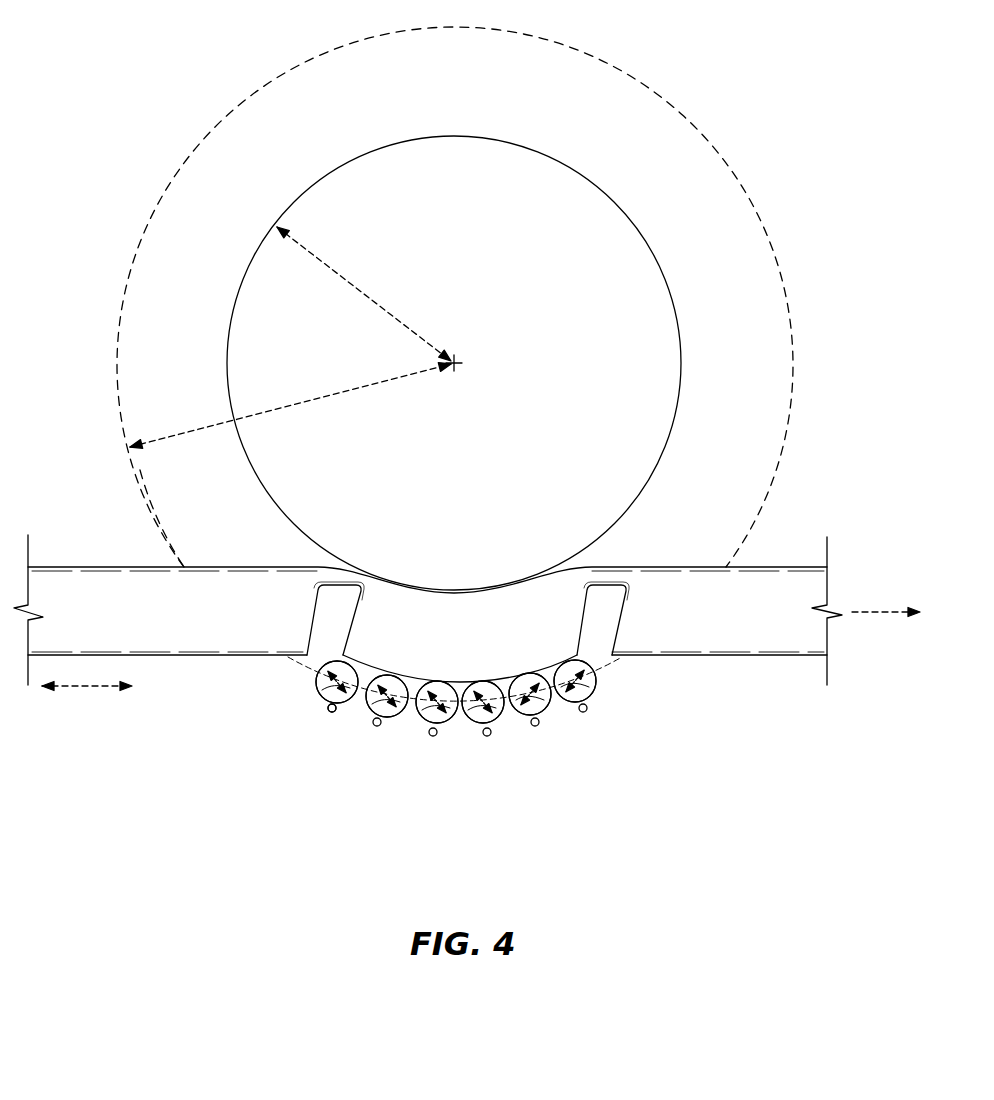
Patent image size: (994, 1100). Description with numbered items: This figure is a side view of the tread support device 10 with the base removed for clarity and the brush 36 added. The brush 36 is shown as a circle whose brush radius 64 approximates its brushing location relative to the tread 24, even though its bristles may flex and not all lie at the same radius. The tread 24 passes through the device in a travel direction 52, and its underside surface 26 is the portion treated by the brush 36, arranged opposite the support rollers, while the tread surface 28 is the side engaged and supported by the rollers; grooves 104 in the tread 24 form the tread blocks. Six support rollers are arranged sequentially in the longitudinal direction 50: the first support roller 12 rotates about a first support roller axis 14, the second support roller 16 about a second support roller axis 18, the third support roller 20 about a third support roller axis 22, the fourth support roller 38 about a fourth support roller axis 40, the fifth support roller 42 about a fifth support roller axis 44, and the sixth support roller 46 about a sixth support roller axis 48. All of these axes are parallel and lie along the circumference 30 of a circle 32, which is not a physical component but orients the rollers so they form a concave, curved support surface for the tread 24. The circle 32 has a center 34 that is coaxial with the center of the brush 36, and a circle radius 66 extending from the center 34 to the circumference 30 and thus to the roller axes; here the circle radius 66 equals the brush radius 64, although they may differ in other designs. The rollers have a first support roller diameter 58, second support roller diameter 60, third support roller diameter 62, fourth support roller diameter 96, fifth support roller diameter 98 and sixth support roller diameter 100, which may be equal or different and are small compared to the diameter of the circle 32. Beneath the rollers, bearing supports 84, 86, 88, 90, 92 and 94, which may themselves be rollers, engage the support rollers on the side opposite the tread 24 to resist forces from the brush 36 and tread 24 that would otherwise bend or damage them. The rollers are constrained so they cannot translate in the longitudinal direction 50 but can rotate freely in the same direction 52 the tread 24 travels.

The tread support device 10 is at (618, 753).
The first support roller 12 is at (322, 708).
The first support roller axis 14 is at (317, 683).
The second support roller 16 is at (370, 713).
The second support roller axis 18 is at (400, 676).
The third support roller 20 is at (452, 722).
The third support roller axis 22 is at (443, 686).
The tread 24 is at (770, 588).
The underside surface 26 is at (648, 567).
The tread surface 28 is at (718, 655).
The circumference 30 is at (150, 522).
The circle 32 is at (782, 278).
The center 34 is at (457, 357).
The brush 36 is at (678, 310).
The fourth support roller 38 is at (465, 723).
The fourth support roller axis 40 is at (473, 687).
The fifth support roller 42 is at (524, 720).
The fifth support roller axis 44 is at (517, 675).
The sixth support roller 46 is at (566, 705).
The sixth support roller axis 48 is at (559, 672).
The longitudinal direction 50 is at (87, 688).
The direction 52 is at (873, 611).
The first support roller diameter 58 is at (352, 672).
The second support roller diameter 60 is at (391, 717).
The third support roller diameter 62 is at (423, 723).
The brush radius 64 is at (364, 294).
The circle radius 66 is at (323, 400).
The bearing support 84 is at (331, 712).
The bearing support 86 is at (377, 726).
The bearing support 88 is at (433, 736).
The bearing support 90 is at (486, 736).
The bearing support 92 is at (535, 726).
The bearing support 94 is at (583, 712).
The fourth support roller diameter 96 is at (503, 723).
The fifth support roller diameter 98 is at (541, 708).
The sixth support roller diameter 100 is at (590, 687).
The grooves 104 is at (327, 610).